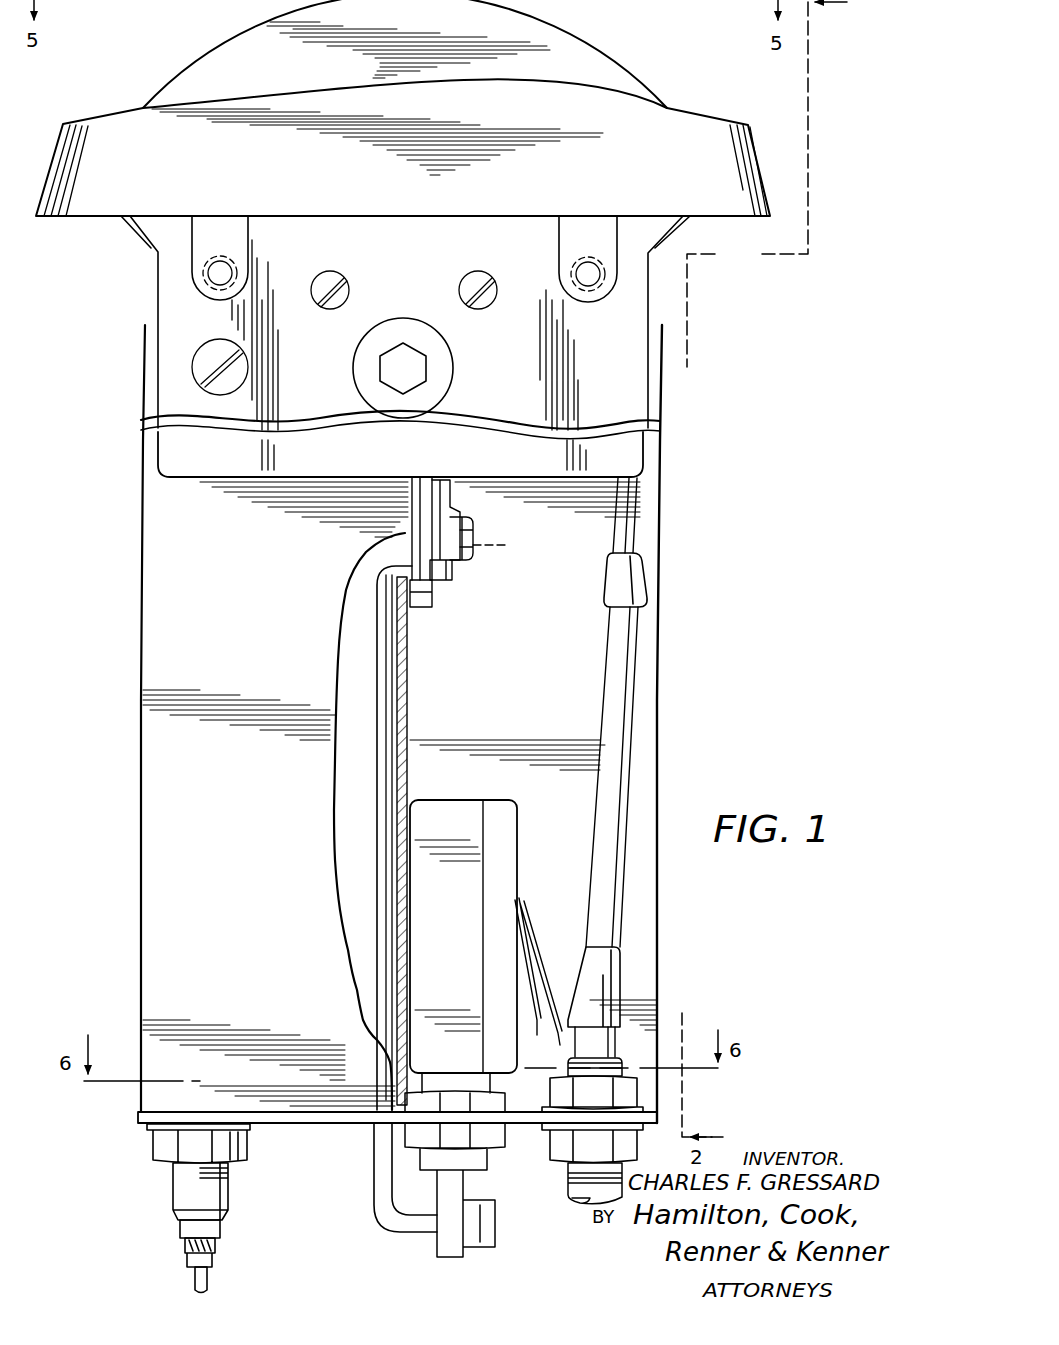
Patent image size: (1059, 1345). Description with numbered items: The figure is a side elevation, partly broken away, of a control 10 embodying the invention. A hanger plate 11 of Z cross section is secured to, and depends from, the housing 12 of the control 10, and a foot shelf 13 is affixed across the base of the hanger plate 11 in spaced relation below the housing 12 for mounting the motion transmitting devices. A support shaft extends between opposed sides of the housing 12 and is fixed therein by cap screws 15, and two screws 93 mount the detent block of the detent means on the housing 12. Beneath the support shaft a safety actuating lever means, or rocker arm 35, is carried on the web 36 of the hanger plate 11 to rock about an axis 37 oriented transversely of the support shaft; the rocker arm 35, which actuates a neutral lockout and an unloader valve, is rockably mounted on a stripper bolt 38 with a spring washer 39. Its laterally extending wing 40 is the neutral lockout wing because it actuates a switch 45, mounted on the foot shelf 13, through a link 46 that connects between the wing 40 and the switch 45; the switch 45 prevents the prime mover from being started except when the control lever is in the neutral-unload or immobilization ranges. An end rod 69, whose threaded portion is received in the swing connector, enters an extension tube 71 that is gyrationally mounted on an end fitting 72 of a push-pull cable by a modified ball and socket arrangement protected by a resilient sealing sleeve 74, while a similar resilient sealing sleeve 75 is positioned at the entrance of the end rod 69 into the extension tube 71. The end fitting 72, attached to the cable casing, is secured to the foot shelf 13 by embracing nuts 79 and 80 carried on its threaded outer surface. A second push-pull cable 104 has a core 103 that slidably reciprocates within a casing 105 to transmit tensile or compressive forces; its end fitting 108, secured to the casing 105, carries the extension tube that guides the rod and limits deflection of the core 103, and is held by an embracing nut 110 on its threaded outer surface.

The control 10 is at (735, 411).
The hanger plate 11 is at (134, 802).
The housing 12 is at (106, 200).
The foot shelf 13 is at (267, 1117).
The cap screws 15 is at (422, 366).
The rocker arm 35 is at (449, 485).
The web 36 is at (412, 722).
The axis 37 is at (506, 545).
The stripper bolt 38 is at (472, 535).
The spring washer 39 is at (455, 520).
The neutral lockout wing 40 is at (434, 600).
The switch 45 is at (468, 1028).
The link 46 is at (376, 862).
The end rod 69 is at (633, 510).
The extension tube 71 is at (607, 722).
The end fitting 72 is at (608, 1043).
The resilient sealing sleeve 74 is at (605, 975).
The resilient sealing sleeve 75 is at (641, 590).
The embracing nut 79 is at (632, 1096).
The embracing nut 80 is at (554, 1150).
The screws 93 is at (345, 280).
The core 103 is at (192, 1286).
The push-pull cable 104 is at (228, 1256).
The casing 105 is at (176, 1231).
The end fitting 108 is at (218, 1202).
The embracing nut 110 is at (242, 1150).